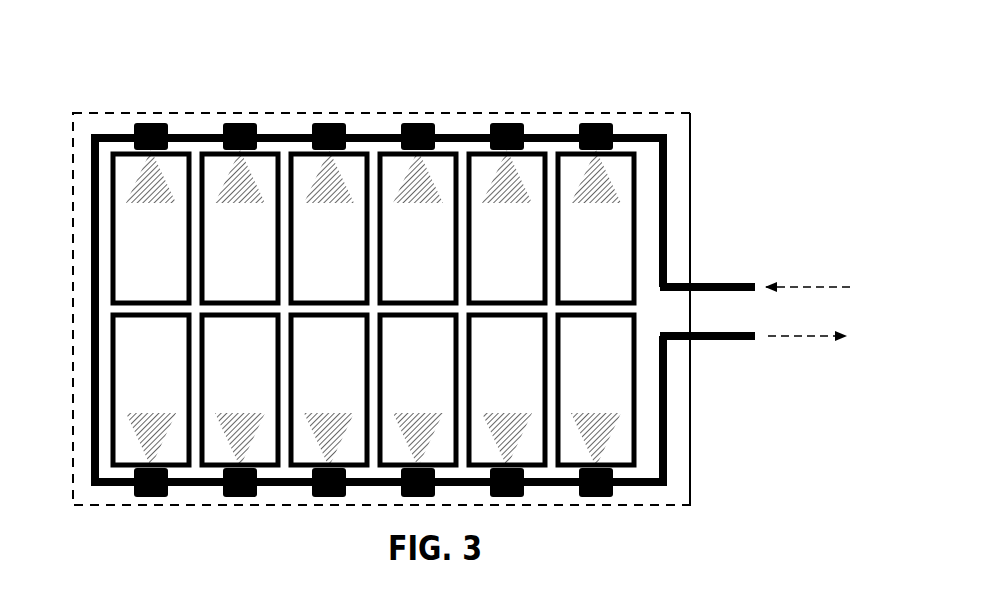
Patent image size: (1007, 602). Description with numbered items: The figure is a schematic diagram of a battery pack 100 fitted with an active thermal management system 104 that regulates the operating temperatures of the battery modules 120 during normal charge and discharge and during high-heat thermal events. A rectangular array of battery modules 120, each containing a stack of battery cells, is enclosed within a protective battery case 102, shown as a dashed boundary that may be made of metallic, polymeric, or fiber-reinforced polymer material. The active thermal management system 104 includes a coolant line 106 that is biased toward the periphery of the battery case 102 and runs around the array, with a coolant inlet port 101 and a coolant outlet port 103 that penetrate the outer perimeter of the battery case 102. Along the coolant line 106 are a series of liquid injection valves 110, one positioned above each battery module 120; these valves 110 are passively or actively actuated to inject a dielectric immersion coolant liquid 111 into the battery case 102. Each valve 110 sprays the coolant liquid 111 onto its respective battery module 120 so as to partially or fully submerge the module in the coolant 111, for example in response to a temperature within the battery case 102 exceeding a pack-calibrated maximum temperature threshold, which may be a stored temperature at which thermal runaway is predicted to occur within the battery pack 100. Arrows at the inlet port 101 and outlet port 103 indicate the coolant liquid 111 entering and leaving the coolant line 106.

The battery pack 100 is at (785, 160).
The coolant inlet port 101 is at (728, 283).
The battery case 102 is at (692, 123).
The coolant outlet port 103 is at (725, 340).
The active thermal management system 104 is at (90, 115).
The coolant line 106 is at (93, 270).
The liquid injection valve 110 is at (148, 122).
The dielectric immersion coolant liquid 111 is at (608, 185).
The battery module 120 is at (128, 241).